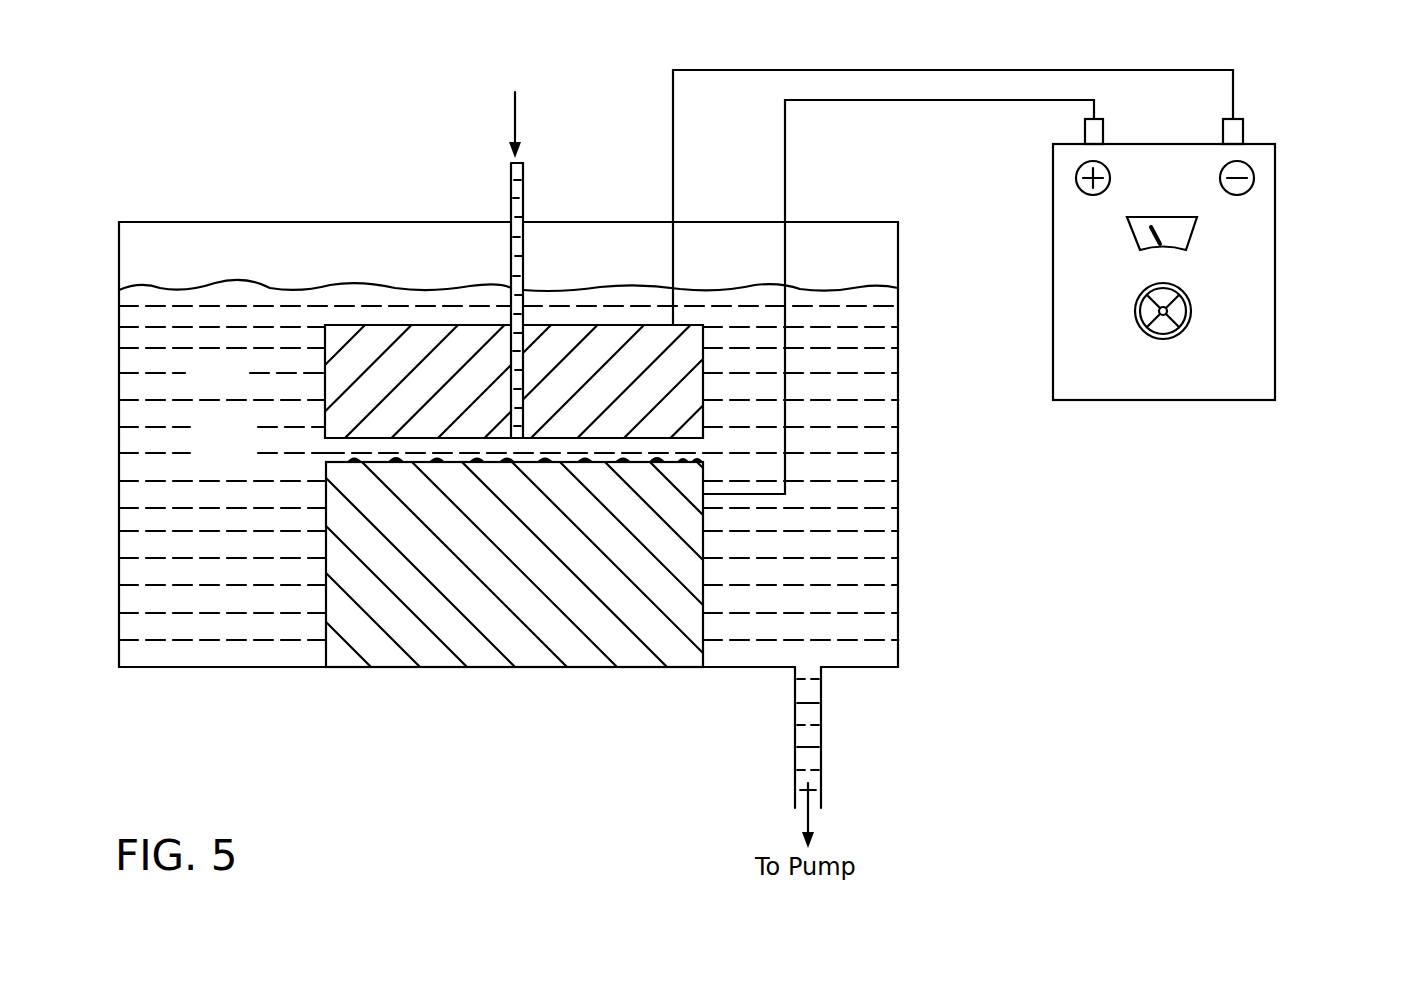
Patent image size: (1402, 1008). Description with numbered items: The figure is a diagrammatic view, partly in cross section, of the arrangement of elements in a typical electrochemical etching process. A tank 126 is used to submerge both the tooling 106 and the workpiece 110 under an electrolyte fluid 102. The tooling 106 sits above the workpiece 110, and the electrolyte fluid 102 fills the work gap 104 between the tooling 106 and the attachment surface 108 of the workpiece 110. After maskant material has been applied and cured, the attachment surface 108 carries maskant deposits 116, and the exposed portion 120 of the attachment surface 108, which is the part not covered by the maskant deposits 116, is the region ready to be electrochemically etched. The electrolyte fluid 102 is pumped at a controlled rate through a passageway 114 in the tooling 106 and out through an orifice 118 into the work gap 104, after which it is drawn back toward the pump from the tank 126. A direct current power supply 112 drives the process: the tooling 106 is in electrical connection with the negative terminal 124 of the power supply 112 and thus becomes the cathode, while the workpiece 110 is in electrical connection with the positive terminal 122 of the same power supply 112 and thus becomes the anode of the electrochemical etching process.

The electrolyte fluid 102 is at (238, 387).
The work gap 104 is at (637, 445).
The tooling 106 is at (390, 313).
The attachment surface 108 is at (697, 446).
The workpiece 110 is at (716, 548).
The direct current power supply 112 is at (1288, 245).
The passageway 114 is at (517, 330).
The maskant deposits 116 is at (352, 458).
The orifice 118 is at (517, 440).
The exposed portion 120 is at (374, 460).
The positive terminal 122 is at (1103, 131).
The negative terminal 124 is at (1243, 131).
The tank 126 is at (906, 493).